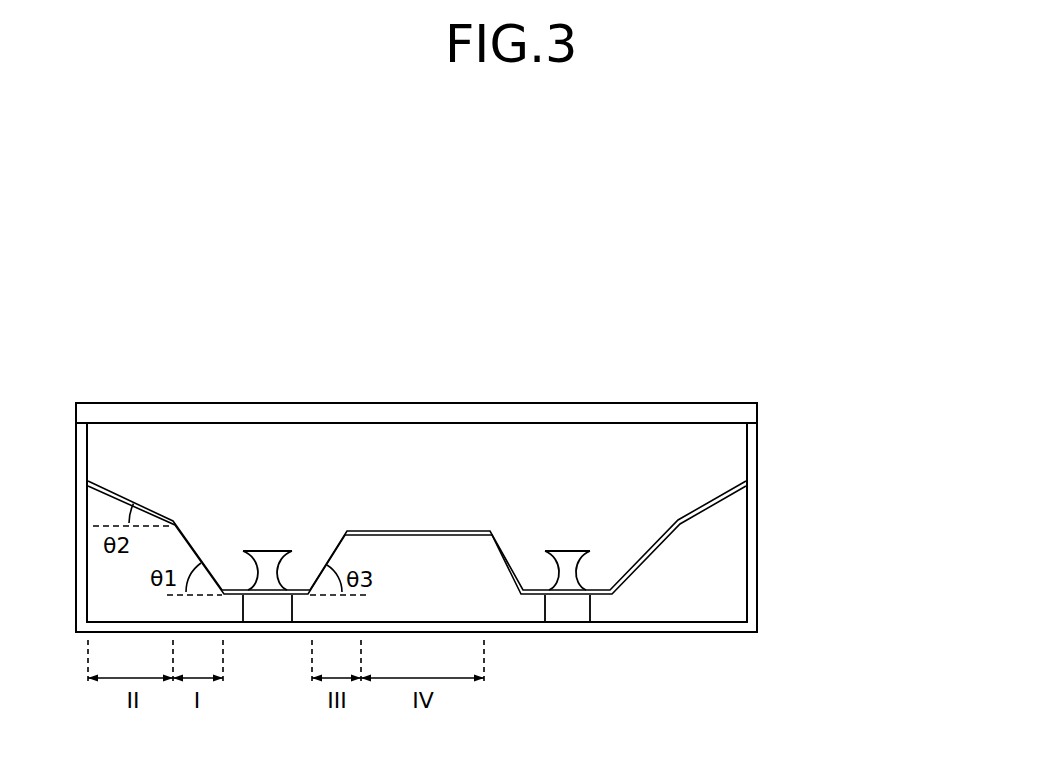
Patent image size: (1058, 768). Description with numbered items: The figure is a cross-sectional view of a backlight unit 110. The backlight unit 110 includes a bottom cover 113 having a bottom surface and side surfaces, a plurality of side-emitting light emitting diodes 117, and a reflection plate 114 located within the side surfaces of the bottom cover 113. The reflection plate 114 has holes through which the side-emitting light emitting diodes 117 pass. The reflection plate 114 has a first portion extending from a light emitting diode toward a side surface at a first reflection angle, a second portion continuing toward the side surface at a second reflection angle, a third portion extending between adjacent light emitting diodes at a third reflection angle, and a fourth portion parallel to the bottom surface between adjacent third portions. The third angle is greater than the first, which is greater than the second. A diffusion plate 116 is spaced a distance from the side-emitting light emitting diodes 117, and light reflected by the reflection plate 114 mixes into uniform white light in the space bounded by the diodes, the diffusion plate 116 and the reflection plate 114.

The backlight unit 110 is at (508, 517).
The bottom cover 113 is at (753, 563).
The reflection plate 114 is at (700, 512).
The diffusion plate 116 is at (728, 414).
The side-emitting light emitting diode 117 is at (570, 572).